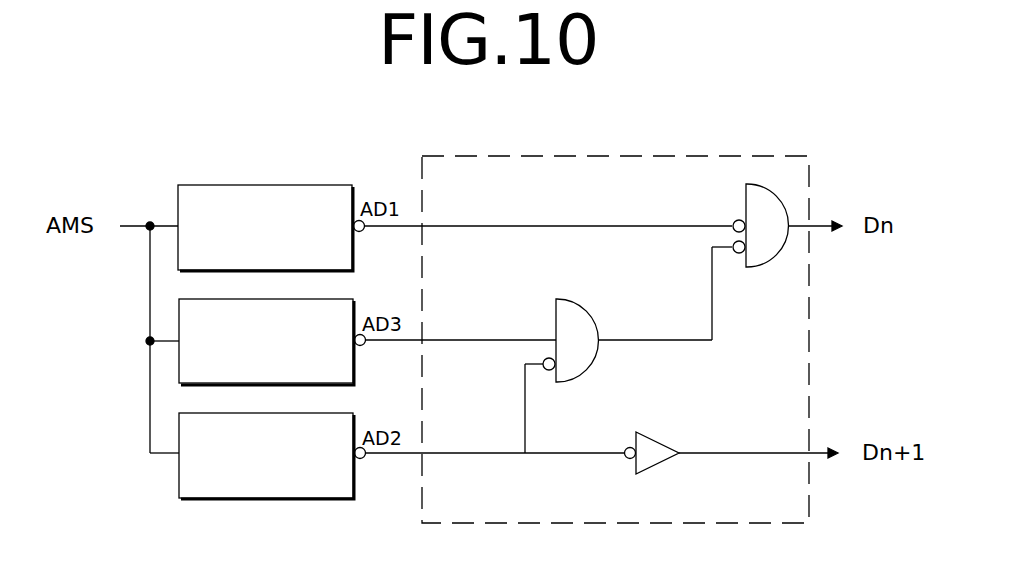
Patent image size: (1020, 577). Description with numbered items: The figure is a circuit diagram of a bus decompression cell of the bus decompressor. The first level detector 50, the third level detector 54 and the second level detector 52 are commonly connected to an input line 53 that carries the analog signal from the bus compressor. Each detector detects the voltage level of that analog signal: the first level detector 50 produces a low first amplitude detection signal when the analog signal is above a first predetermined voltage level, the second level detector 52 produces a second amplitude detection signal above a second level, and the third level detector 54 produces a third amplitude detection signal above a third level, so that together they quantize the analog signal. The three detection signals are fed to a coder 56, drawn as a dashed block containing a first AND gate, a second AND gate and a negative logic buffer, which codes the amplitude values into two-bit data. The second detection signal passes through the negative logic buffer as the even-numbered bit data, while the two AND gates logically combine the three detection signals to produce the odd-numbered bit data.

The first level detector 50 is at (343, 182).
The second level detector 52 is at (353, 412).
The input line 53 is at (134, 222).
The third level detector 54 is at (353, 297).
The coder 56 is at (733, 155).